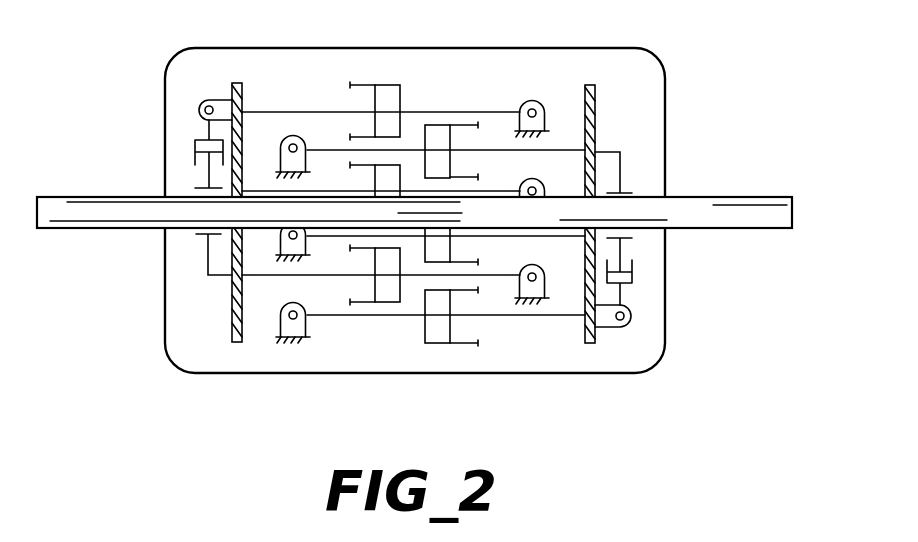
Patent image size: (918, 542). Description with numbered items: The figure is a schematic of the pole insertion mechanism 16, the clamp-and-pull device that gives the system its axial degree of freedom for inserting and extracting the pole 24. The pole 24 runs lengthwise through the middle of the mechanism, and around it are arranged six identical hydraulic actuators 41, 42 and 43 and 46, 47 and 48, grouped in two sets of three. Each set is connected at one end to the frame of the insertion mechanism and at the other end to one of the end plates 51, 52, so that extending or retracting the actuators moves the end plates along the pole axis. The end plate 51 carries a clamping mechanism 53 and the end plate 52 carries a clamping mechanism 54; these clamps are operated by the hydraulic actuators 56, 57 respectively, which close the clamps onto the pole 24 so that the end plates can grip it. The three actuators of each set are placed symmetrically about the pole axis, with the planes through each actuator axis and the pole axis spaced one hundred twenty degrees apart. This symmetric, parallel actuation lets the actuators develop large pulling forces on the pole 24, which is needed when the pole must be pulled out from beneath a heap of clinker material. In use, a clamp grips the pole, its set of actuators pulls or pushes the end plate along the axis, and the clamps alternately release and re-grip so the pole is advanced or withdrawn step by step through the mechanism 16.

The pole insertion mechanism 16 is at (184, 44).
The pole 24 is at (713, 212).
The hydraulic actuator 41 is at (387, 85).
The hydraulic actuator 42 is at (360, 165).
The hydraulic actuator 43 is at (358, 302).
The hydraulic actuator 46 is at (447, 125).
The hydraulic actuator 47 is at (462, 262).
The hydraulic actuator 48 is at (440, 343).
The end plate 51 is at (232, 313).
The end plate 52 is at (597, 107).
The clamping mechanism 53 is at (198, 235).
The clamping mechanism 54 is at (627, 192).
The hydraulic actuator 56 is at (193, 150).
The hydraulic actuator 57 is at (637, 287).